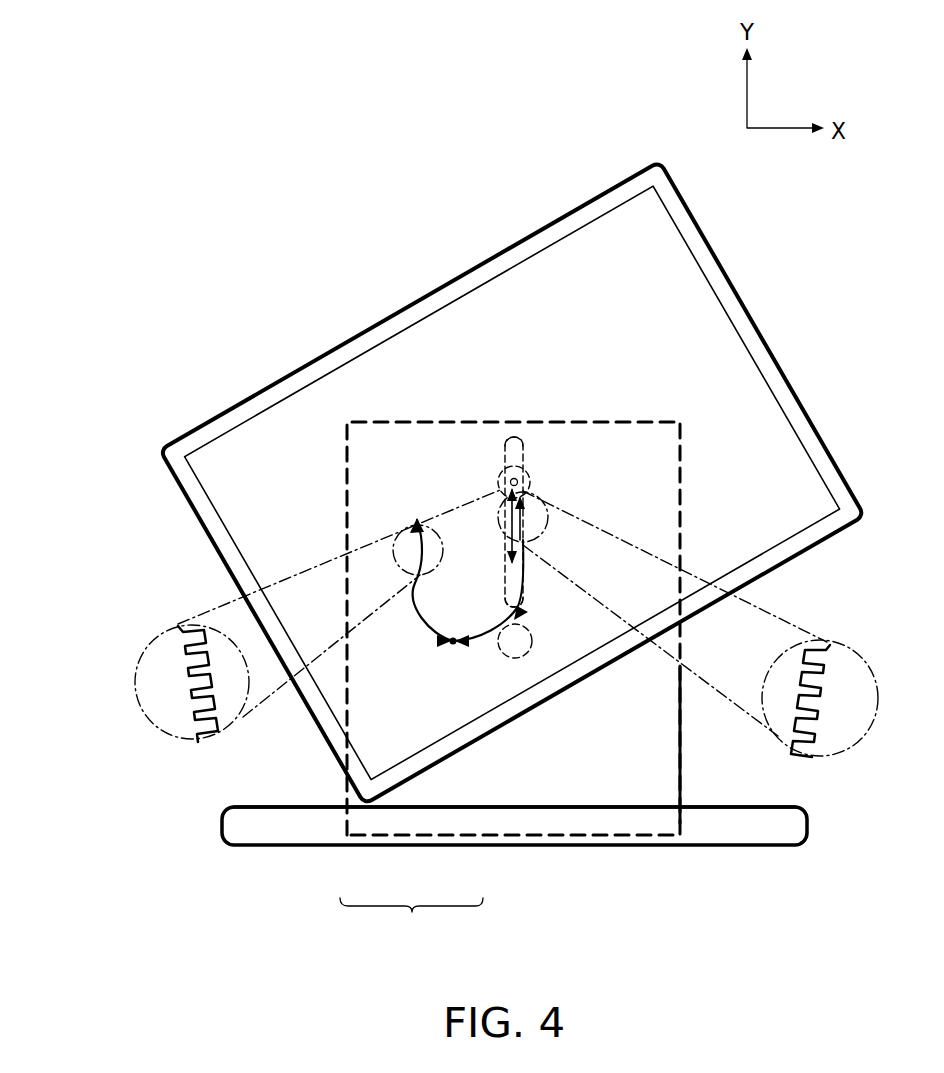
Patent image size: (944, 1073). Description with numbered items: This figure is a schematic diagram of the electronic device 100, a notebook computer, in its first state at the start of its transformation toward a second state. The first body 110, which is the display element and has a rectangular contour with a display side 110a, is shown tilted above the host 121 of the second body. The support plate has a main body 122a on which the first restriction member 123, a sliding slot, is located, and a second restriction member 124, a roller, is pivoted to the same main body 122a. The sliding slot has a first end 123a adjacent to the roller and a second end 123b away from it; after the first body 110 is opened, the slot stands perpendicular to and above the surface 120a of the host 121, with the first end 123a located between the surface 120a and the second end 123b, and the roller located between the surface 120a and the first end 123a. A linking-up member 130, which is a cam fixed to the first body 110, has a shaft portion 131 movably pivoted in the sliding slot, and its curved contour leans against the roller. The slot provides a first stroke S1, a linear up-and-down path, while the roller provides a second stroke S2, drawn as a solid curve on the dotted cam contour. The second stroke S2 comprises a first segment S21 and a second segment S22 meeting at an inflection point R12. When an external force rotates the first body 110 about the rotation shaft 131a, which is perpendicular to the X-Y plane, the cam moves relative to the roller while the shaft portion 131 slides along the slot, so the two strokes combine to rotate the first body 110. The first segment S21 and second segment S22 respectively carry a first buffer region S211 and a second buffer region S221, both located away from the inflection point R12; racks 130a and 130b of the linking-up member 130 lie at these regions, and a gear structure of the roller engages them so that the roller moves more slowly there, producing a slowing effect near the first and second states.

The electronic device 100 is at (860, 930).
The first body 110 is at (778, 383).
The display surface 110a is at (679, 333).
The surface of the host 120a is at (260, 807).
The host 121 is at (245, 826).
The main body of the support plate 122a is at (655, 766).
The first restriction member 123 is at (516, 459).
The first end 123a is at (527, 612).
The second end 123b is at (513, 437).
The second restriction member 124 is at (522, 658).
The linking-up member 130 is at (437, 528).
The rack 130a is at (830, 682).
The rack 130b is at (180, 692).
The shaft portion 131 is at (497, 484).
The rotation shaft 131a is at (503, 479).
The first stroke S1 is at (522, 537).
The second stroke S2 is at (411, 921).
The first segment S21 is at (488, 644).
The second segment S22 is at (416, 622).
The first buffer region S211 is at (858, 742).
The second buffer region S221 is at (230, 740).
The inflection point R12 is at (453, 644).